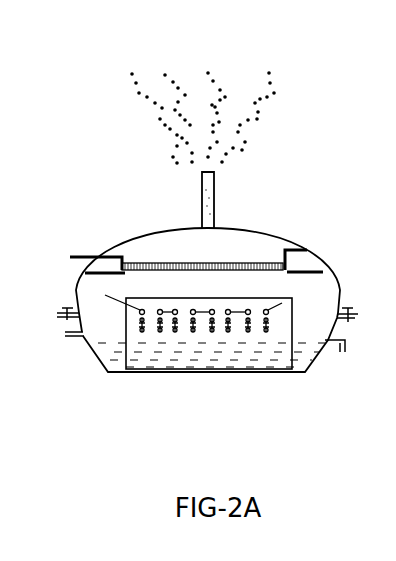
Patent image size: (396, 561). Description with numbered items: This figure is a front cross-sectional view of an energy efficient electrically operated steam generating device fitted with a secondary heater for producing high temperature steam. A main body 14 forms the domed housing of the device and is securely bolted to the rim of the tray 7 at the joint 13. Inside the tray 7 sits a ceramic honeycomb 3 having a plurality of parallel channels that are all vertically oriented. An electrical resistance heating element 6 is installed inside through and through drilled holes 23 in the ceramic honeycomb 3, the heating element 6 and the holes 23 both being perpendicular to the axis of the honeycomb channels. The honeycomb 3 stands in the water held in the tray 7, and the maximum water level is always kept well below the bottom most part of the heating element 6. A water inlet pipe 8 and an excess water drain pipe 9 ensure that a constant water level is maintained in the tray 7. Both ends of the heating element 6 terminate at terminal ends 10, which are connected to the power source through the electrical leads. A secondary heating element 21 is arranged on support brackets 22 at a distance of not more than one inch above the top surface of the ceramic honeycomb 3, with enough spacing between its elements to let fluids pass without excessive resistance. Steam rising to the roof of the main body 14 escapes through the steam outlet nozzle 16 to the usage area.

The steam outlet nozzle 16 is at (236, 195).
The main body 14 is at (248, 226).
The secondary heating element 21 is at (246, 264).
The support bracket 22 is at (315, 266).
The water inlet pipe 8 is at (83, 348).
The ceramic honeycomb 3 is at (121, 331).
The tray 7 is at (166, 383).
The drilled hole 23 is at (203, 338).
The electrical resistance heating element 6 is at (242, 328).
The terminal end 10 is at (282, 323).
The excess water drain pipe 9 is at (333, 355).
The joint 13 is at (360, 333).